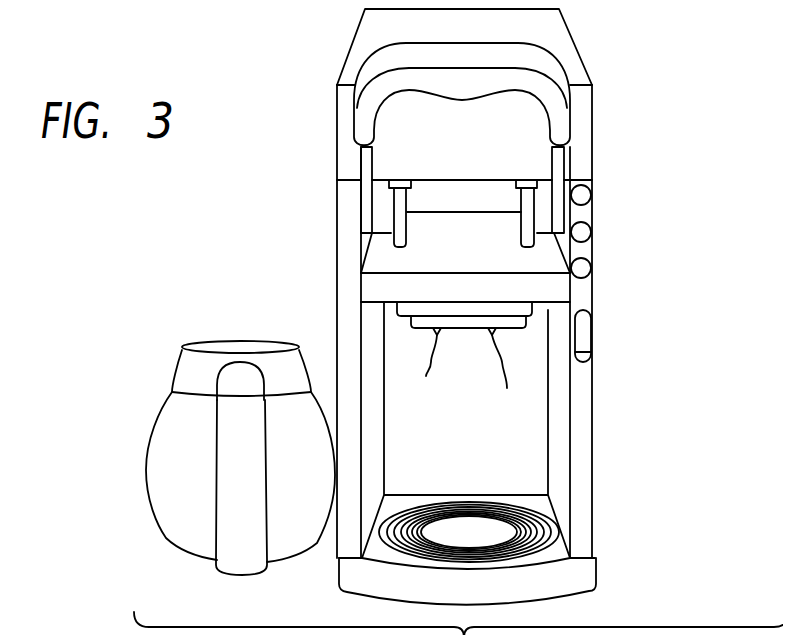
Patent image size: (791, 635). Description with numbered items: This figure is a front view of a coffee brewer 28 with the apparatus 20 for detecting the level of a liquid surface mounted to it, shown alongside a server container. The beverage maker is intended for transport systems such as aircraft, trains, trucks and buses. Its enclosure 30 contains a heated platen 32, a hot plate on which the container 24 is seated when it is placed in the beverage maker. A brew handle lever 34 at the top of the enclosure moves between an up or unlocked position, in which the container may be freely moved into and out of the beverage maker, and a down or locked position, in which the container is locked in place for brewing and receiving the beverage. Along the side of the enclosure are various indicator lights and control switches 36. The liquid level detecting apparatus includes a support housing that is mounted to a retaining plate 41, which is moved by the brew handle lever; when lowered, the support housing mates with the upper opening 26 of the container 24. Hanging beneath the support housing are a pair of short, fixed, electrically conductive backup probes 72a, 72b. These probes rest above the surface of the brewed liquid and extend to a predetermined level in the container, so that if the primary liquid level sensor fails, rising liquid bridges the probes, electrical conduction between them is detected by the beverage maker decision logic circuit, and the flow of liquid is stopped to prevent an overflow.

The apparatus for detecting a level of a surface of a liquid 20 is at (597, 300).
The container 24 is at (180, 412).
The upper opening 26 is at (242, 345).
The coffee brewer 28 is at (292, 230).
The enclosure 30 is at (597, 440).
The heated platen 32 is at (525, 532).
The brew handle lever 34 is at (552, 66).
The indicator lights and control switches 36 is at (600, 180).
The retaining plate 41 is at (384, 263).
The backup probe 72a is at (426, 366).
The backup probe 72b is at (507, 374).